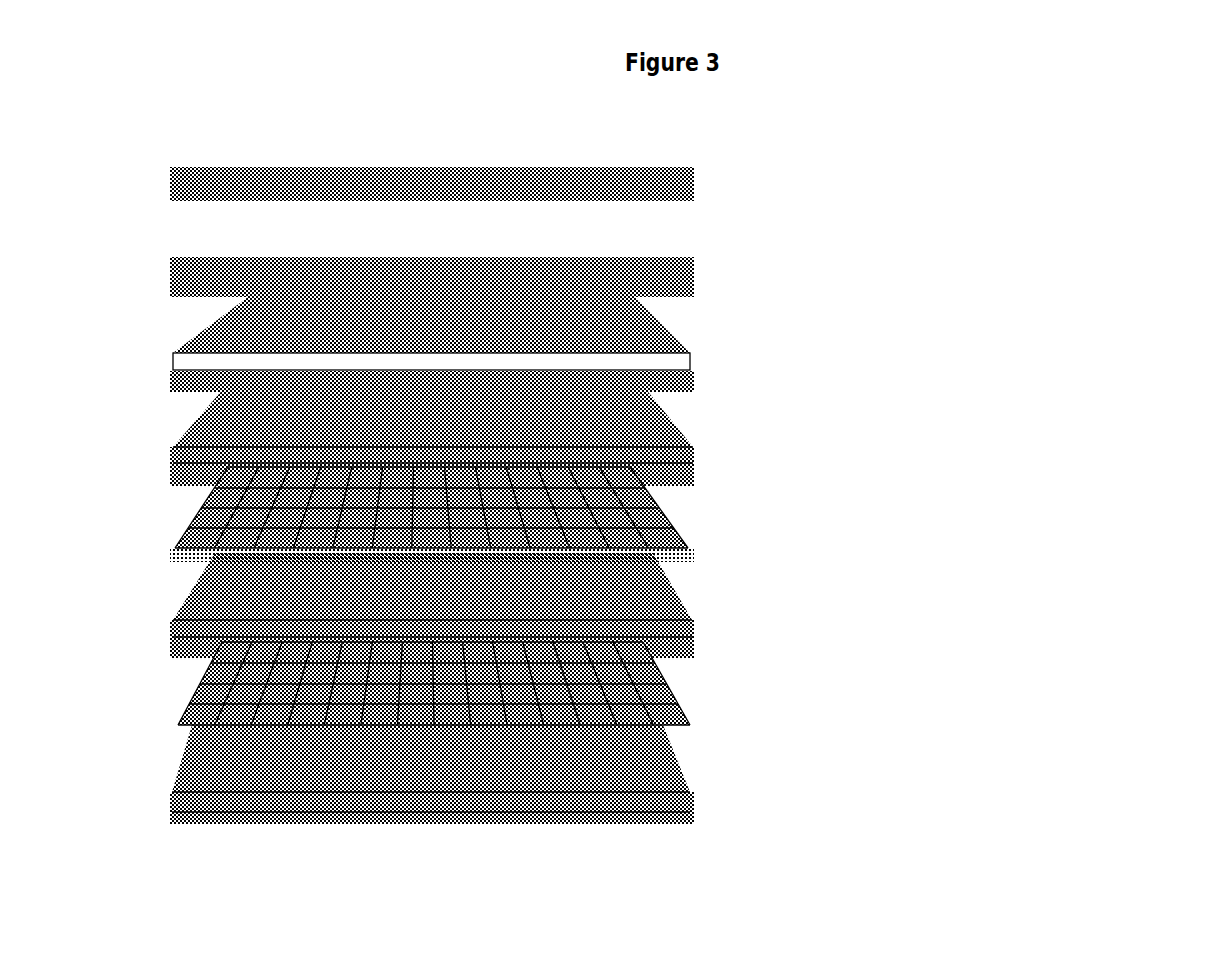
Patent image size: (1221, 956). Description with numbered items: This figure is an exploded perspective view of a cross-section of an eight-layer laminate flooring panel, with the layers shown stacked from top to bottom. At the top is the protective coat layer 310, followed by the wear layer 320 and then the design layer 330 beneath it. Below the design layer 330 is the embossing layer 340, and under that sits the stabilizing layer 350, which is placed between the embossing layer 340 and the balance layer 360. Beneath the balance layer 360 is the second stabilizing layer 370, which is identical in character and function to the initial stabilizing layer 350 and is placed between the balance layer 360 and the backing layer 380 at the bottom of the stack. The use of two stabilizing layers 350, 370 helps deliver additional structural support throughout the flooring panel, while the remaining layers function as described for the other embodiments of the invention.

The protective coat layer 310 is at (703, 182).
The wear layer 320 is at (703, 271).
The design layer 330 is at (703, 365).
The embossing layer 340 is at (703, 458).
The stabilizing layer 350 is at (703, 542).
The balance layer 360 is at (703, 629).
The second stabilizing layer 370 is at (703, 718).
The backing layer 380 is at (703, 806).